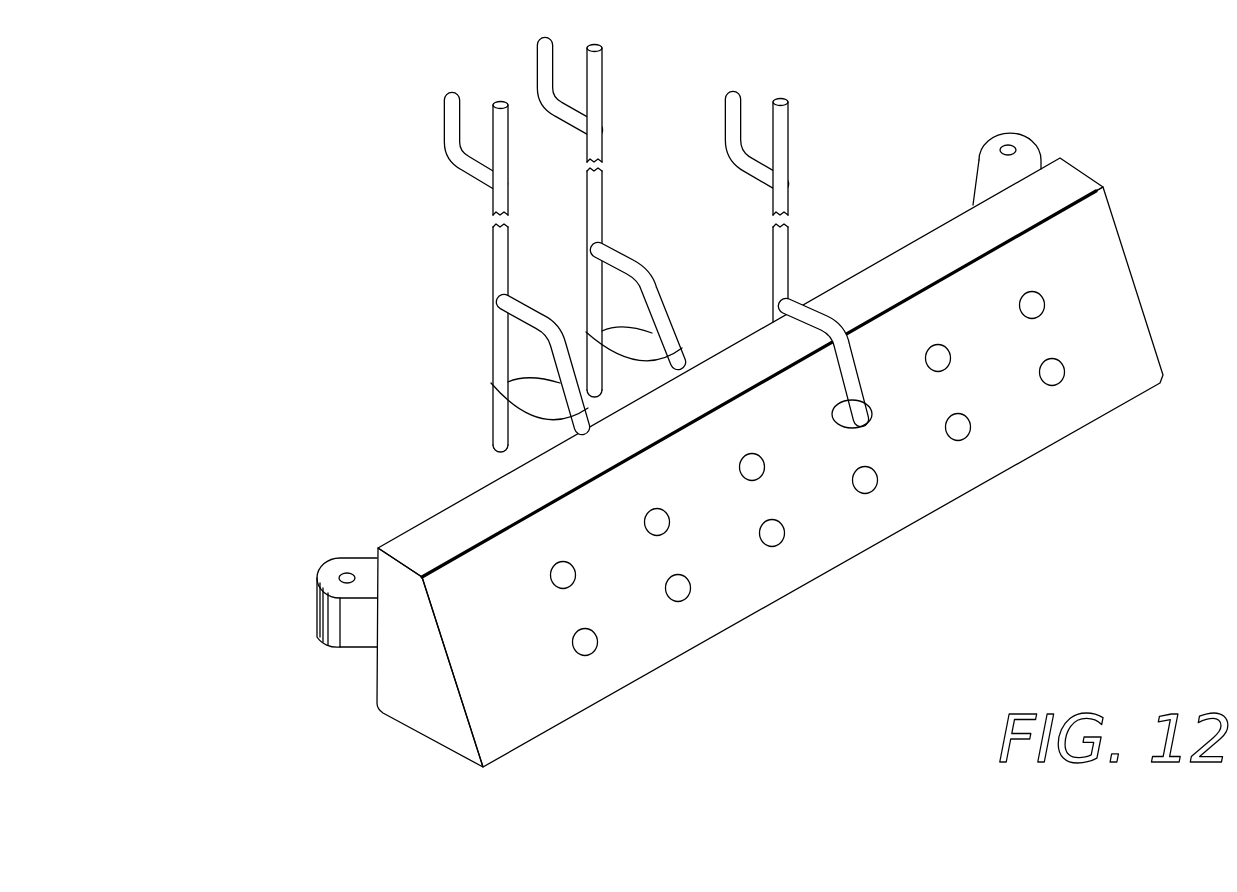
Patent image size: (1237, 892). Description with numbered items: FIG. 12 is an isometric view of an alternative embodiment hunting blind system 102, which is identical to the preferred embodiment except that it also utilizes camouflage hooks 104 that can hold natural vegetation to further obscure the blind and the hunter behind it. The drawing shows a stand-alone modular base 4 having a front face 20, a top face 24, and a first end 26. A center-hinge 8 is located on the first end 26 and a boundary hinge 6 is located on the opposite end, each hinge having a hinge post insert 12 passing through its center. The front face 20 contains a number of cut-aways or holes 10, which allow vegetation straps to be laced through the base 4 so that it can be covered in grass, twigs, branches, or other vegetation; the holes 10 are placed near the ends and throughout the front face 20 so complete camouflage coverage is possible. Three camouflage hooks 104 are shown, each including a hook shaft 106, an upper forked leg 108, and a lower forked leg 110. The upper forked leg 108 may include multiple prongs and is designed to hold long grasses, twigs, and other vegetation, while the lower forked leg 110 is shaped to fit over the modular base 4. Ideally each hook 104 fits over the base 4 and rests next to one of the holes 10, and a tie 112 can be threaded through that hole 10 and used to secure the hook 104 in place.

The hunting blind system 102 is at (653, 400).
The camouflage hook 104 is at (592, 250).
The hook shaft 106 is at (493, 270).
The upper forked leg 108 is at (472, 158).
The lower forked leg 110 is at (562, 327).
The tie 112 is at (487, 406).
The modular base 4 is at (710, 416).
The boundary hinge 6 is at (978, 165).
The center-hinge 8 is at (318, 606).
The holes 10 is at (1032, 305).
The hinge post insert 12 is at (347, 576).
The front face 20 is at (540, 568).
The top face 24 is at (500, 524).
The first end 26 is at (447, 722).